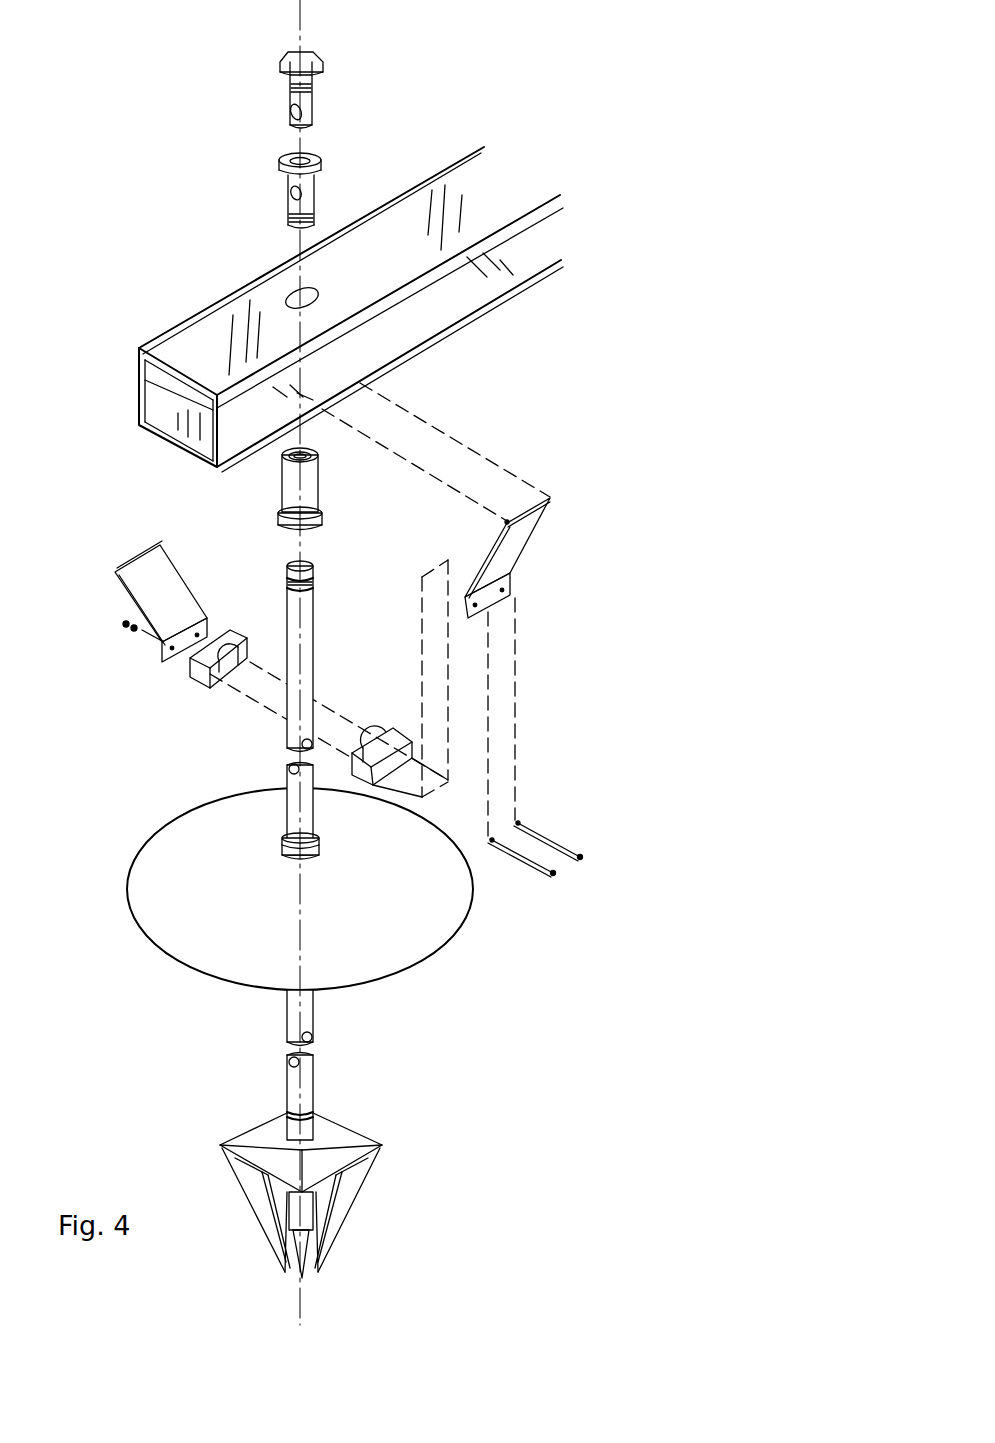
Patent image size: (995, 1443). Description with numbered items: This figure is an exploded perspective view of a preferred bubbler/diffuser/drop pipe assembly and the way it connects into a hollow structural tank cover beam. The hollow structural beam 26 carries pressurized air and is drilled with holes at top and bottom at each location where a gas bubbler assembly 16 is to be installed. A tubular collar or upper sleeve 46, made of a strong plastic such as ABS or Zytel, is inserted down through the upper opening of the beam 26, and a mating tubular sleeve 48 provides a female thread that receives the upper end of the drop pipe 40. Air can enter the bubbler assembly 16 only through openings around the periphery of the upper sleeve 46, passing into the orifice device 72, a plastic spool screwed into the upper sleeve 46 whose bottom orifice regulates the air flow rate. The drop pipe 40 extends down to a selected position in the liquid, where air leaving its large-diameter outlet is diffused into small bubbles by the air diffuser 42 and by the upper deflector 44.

The gas bubbler device 16 is at (650, 387).
The hollow structural beam 26 is at (548, 237).
The drop pipe 40 is at (298, 722).
The air diffuser 42 is at (372, 1137).
The upper deflector 44 is at (173, 947).
The upper tubular sleeve 46 is at (288, 210).
The mating tubular sleeve 48 is at (320, 482).
The orifice device 72 is at (283, 67).